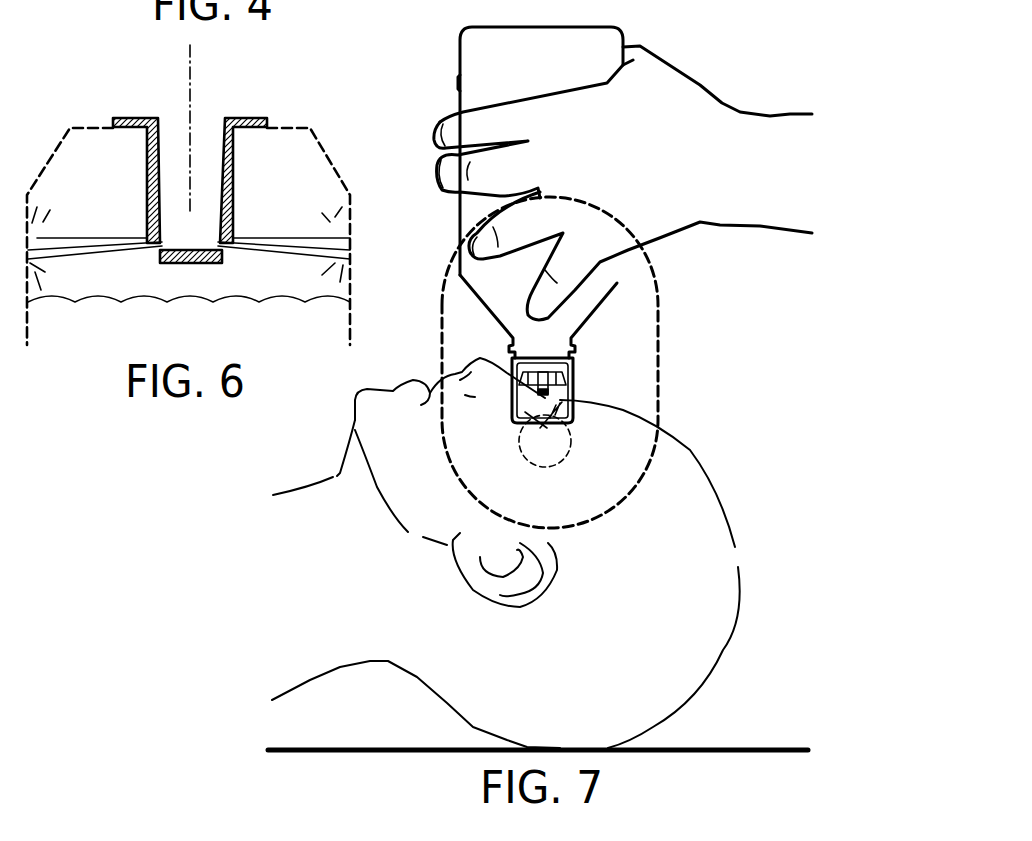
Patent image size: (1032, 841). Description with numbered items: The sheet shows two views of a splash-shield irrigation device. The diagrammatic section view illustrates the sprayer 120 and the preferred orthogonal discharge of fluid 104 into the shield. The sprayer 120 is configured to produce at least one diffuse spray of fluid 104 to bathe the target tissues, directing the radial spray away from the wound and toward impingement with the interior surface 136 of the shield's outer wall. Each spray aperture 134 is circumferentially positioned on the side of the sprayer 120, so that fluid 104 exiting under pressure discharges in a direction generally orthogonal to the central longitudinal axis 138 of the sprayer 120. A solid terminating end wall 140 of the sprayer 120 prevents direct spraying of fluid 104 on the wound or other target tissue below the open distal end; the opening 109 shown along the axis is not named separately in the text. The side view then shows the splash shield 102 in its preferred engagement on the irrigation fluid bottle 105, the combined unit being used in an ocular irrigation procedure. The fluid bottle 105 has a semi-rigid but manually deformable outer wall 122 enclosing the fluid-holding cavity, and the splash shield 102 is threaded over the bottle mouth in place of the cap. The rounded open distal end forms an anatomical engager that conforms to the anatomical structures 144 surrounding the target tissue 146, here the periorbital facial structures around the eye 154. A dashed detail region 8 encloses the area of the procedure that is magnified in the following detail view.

In FIG. 6, the central longitudinal axis 138 is at (186, 83).
In FIG. 6, the aperture 109 is at (196, 138).
In FIG. 6, the sprayer 120 is at (256, 175).
In FIG. 6, the fluid 104 is at (67, 237).
In FIG. 6, the spray aperture 134 is at (222, 253).
In FIG. 6, the interior surface 136 is at (33, 315).
In FIG. 6, the solid terminating end wall 140 is at (193, 263).
In FIG. 7, the fluid bottle 105 is at (470, 28).
In FIG. 7, the outer wall 122 is at (485, 70).
In FIG. 7, the detail region 8 is at (660, 360).
In FIG. 7, the splash shield 102 is at (572, 377).
In FIG. 7, the anatomical structures 144 is at (515, 408).
In FIG. 7, the eye 154 is at (575, 446).
In FIG. 7, the target tissue 146 is at (580, 480).